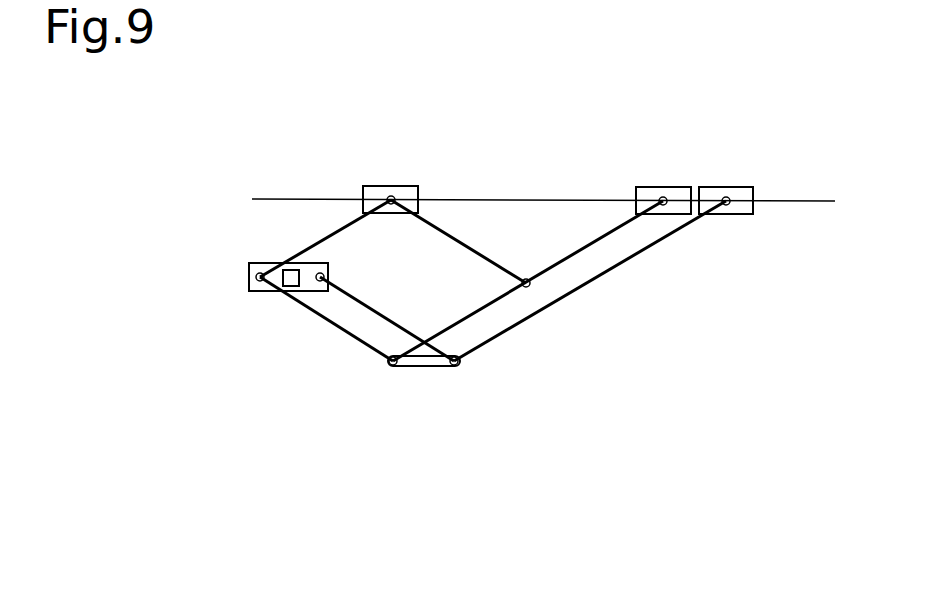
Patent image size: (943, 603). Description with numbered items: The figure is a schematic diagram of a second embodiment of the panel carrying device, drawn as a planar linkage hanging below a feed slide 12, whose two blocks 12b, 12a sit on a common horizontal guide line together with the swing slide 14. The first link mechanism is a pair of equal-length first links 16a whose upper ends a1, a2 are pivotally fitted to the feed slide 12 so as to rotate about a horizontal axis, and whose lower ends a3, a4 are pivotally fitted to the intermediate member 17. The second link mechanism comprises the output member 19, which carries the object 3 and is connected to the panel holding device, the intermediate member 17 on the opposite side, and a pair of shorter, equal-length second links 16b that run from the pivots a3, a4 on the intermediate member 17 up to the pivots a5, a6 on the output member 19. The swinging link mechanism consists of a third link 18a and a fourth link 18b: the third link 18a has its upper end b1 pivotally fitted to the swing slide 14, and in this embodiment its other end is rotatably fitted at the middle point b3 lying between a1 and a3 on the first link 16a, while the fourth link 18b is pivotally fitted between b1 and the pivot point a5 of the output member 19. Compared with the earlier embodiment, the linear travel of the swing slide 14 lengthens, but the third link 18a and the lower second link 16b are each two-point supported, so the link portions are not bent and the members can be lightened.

The swing slide 14 is at (372, 190).
The upper end of third link b1 is at (394, 195).
The fourth link 18b is at (320, 241).
The third link 18a is at (452, 233).
The middle point of first link b3 is at (526, 279).
The feed slide 12 is at (702, 145).
The feed slide portion 12b is at (652, 192).
The feed slide portion 12a is at (732, 189).
The upper end of first link a1 is at (666, 205).
The upper end of first link a2 is at (730, 205).
The first links 16a is at (562, 263).
The output member 19 is at (253, 292).
The object 3 is at (290, 281).
The upper end of second link a5 is at (260, 273).
The upper end of second link a6 is at (324, 276).
The second links 16b is at (377, 313).
The intermediate member 17 is at (423, 363).
The lower end of links a3 is at (391, 365).
The lower end of links a4 is at (458, 366).